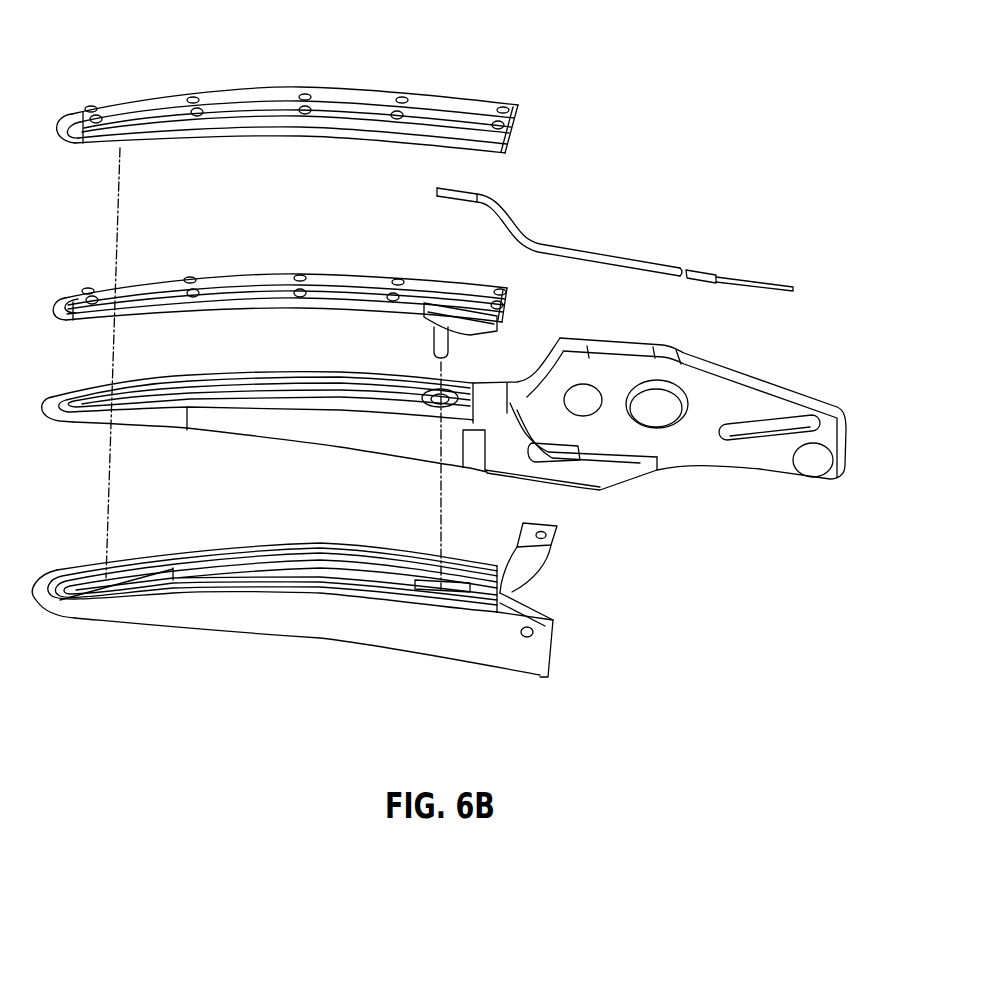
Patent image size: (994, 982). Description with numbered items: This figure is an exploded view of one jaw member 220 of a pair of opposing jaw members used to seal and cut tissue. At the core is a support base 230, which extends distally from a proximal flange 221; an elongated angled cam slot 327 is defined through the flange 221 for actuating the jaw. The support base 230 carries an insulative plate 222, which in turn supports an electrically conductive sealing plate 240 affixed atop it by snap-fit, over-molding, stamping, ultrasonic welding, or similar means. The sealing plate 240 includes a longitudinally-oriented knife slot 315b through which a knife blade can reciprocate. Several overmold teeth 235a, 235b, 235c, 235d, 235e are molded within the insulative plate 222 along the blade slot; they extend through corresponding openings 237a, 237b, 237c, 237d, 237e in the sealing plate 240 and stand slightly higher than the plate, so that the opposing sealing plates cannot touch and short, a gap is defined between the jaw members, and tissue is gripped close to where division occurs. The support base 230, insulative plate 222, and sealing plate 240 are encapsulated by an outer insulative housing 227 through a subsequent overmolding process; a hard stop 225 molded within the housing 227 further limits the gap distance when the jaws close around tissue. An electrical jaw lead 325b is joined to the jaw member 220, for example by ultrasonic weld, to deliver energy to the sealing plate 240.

The jaw member 220 is at (692, 90).
The sealing plate 240 is at (248, 93).
The opening 237a is at (90, 106).
The opening 237b is at (193, 96).
The opening 237c is at (305, 93).
The opening 237d is at (401, 95).
The opening 237e is at (505, 106).
The knife slot 315b is at (455, 110).
The insulative plate 222 is at (253, 273).
The overmold tooth 235a is at (90, 288).
The overmold tooth 235b is at (190, 276).
The overmold tooth 235c is at (300, 275).
The overmold tooth 235d is at (400, 278).
The overmold tooth 235e is at (502, 287).
The electrical jaw lead 325b is at (597, 260).
The support base 230 is at (313, 372).
The proximal flange 221 is at (747, 377).
The cam slot 327 is at (773, 427).
The hard stop 225 is at (558, 543).
The insulative housing 227 is at (357, 633).